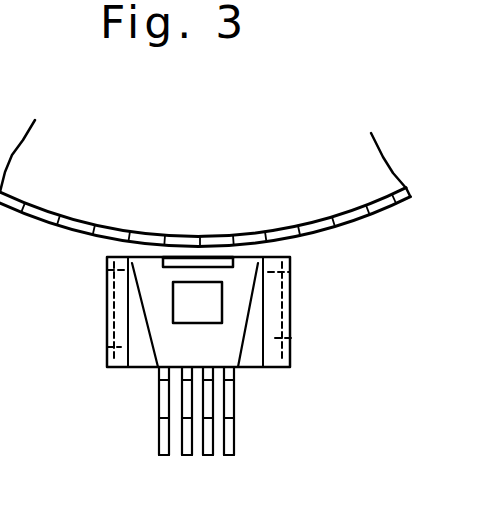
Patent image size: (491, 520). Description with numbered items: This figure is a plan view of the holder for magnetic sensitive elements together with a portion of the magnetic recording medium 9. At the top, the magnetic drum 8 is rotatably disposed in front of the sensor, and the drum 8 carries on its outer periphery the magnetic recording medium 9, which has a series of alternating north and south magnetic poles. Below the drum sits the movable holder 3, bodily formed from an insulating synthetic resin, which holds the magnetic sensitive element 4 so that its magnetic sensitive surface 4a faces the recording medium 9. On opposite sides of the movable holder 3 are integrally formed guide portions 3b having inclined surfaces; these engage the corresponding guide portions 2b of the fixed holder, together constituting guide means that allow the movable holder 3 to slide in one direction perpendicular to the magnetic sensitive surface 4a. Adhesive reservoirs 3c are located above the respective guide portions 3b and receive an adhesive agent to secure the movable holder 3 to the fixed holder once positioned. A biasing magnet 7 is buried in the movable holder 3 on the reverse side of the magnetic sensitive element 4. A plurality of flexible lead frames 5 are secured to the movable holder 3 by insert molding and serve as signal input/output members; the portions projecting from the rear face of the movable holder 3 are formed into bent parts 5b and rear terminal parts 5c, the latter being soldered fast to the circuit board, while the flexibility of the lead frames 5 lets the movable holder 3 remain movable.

The movable holder 3 is at (237, 347).
The guide portion 2b is at (107, 347).
The guide portion 3b is at (123, 328).
The adhesive reservoir 3c is at (136, 310).
The magnetic sensitive element 4 is at (163, 266).
The magnetic sensitive surface 4a is at (210, 250).
The flexible lead frame 5 is at (230, 395).
The bent part 5b is at (232, 420).
The rear terminal part 5c is at (164, 455).
The biasing magnet 7 is at (190, 313).
The magnetic drum 8 is at (371, 168).
The magnetic recording medium 9 is at (383, 203).